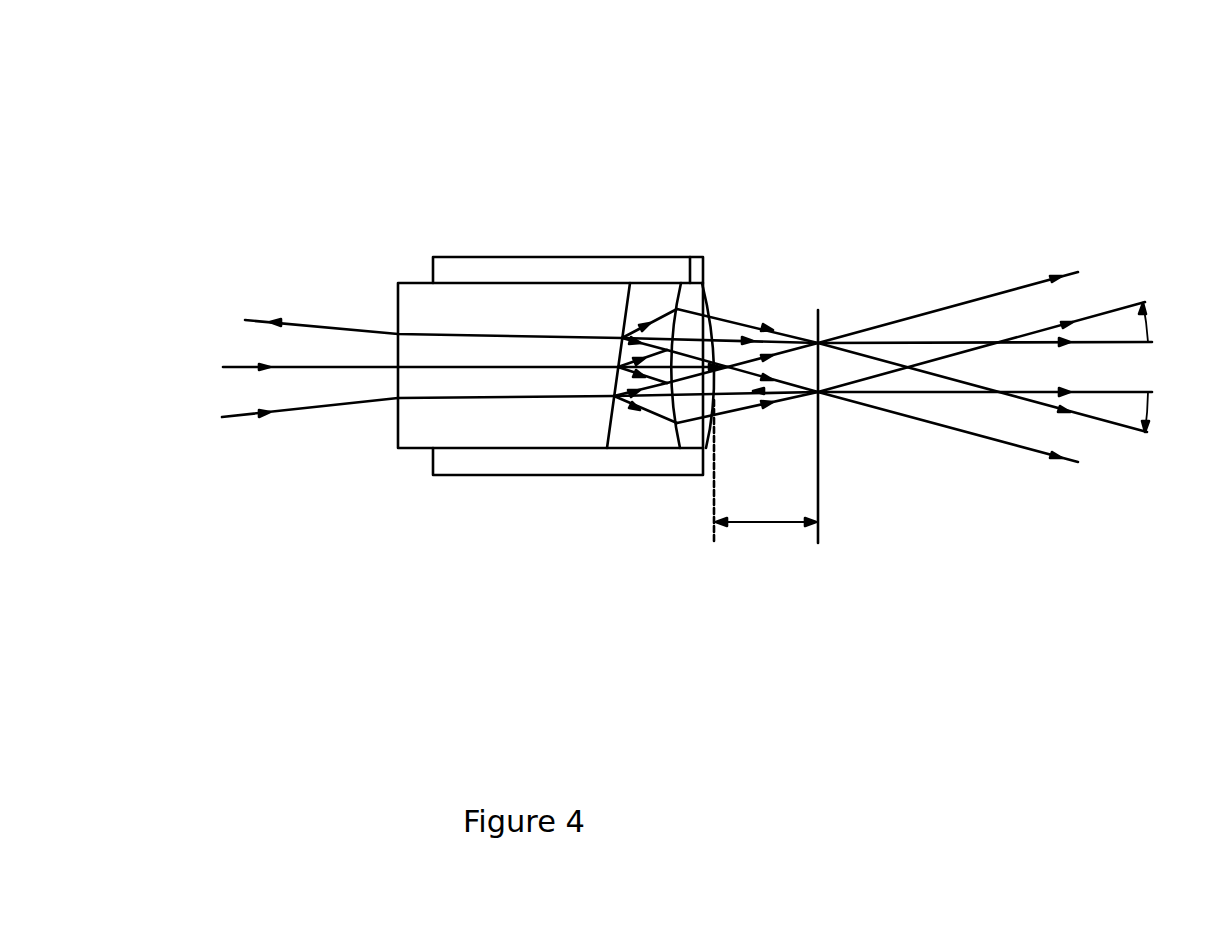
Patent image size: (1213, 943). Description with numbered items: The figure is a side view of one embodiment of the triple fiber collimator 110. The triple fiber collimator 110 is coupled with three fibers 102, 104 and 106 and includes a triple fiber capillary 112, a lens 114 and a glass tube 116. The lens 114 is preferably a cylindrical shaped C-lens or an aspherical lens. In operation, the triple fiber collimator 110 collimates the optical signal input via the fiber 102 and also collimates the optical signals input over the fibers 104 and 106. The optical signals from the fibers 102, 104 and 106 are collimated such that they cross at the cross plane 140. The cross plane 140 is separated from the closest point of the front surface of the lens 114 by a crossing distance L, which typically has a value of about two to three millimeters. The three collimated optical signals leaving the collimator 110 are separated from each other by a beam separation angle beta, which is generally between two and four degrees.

The triple fiber collimator 110 is at (552, 57).
The triple fiber capillary 112 is at (412, 283).
The lens 114 is at (692, 283).
The glass tube 116 is at (597, 257).
The fiber 102 is at (310, 325).
The fiber 104 is at (238, 413).
The fiber 106 is at (237, 367).
The cross plane 140 is at (818, 310).